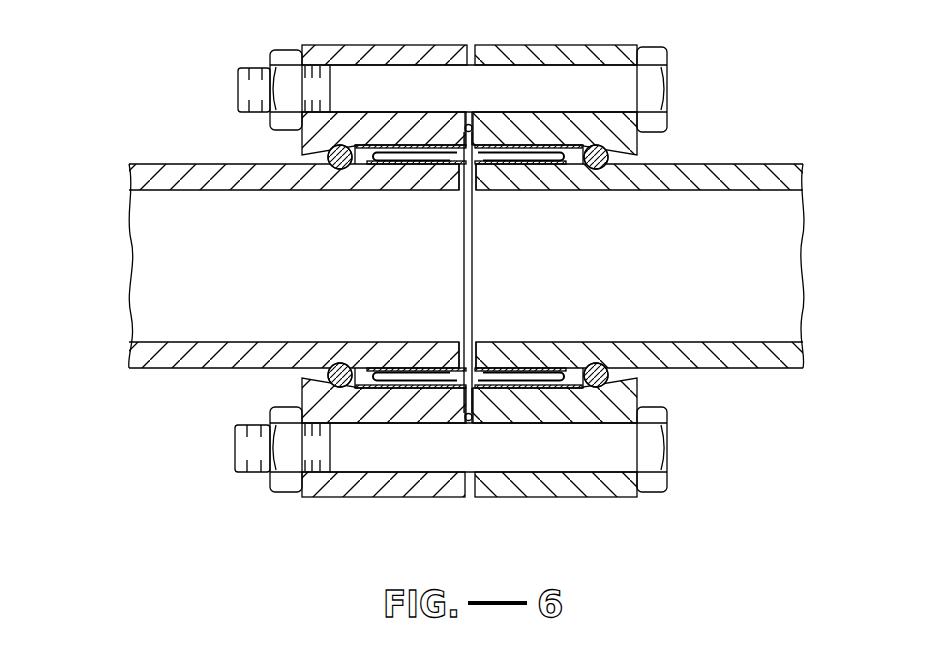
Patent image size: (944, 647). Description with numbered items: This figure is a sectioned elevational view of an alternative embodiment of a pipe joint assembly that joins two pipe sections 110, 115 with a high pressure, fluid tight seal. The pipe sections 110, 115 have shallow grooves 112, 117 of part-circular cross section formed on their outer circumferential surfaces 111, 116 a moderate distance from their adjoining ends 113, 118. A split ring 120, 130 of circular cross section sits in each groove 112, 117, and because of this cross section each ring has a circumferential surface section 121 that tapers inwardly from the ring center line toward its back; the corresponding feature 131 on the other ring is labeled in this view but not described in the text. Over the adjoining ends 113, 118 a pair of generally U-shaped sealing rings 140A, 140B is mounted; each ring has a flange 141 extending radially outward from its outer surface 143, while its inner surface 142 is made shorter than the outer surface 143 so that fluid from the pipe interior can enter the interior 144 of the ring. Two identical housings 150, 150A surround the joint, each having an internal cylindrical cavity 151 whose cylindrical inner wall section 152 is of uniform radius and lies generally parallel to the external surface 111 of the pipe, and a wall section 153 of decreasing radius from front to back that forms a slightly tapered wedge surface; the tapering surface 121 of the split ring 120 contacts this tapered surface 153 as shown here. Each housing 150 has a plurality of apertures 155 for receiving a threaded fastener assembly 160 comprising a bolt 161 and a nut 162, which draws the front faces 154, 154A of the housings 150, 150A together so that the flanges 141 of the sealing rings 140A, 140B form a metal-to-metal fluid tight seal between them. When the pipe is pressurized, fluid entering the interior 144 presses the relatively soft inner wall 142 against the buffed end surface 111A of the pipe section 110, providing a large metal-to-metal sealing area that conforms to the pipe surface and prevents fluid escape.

The pipe section 110 is at (772, 156).
The outer circumferential surface 111 is at (677, 163).
The end surface of pipe section 111A is at (476, 190).
The groove 112 is at (607, 169).
The adjoining end 113 is at (474, 220).
The pipe section 115 is at (178, 156).
The outer circumferential surface 116 is at (237, 163).
The groove 117 is at (338, 169).
The adjoining end 118 is at (458, 203).
The split ring 120 is at (598, 363).
The circumferential surface section 121 is at (585, 366).
The split ring 130 is at (335, 367).
The O-ring seal 131 is at (341, 362).
The sealing ring 140A is at (540, 126).
The sealing ring 140B is at (412, 134).
The flange 141 is at (489, 128).
The inner surface 142 is at (540, 166).
The outer surface 143 is at (512, 138).
The interior of sealing ring 144 is at (554, 153).
The housing 150 is at (573, 526).
The housing 150A is at (405, 526).
The cavity 151 is at (579, 388).
The cylindrical inner wall section 152 is at (566, 380).
The tapered wedge surface 153 is at (612, 378).
The front face 154 is at (468, 423).
The front face 154A is at (463, 421).
The aperture 155 is at (637, 497).
The threaded fastener assembly 160 is at (664, 40).
The bolt 161 is at (660, 90).
The nut 162 is at (287, 55).